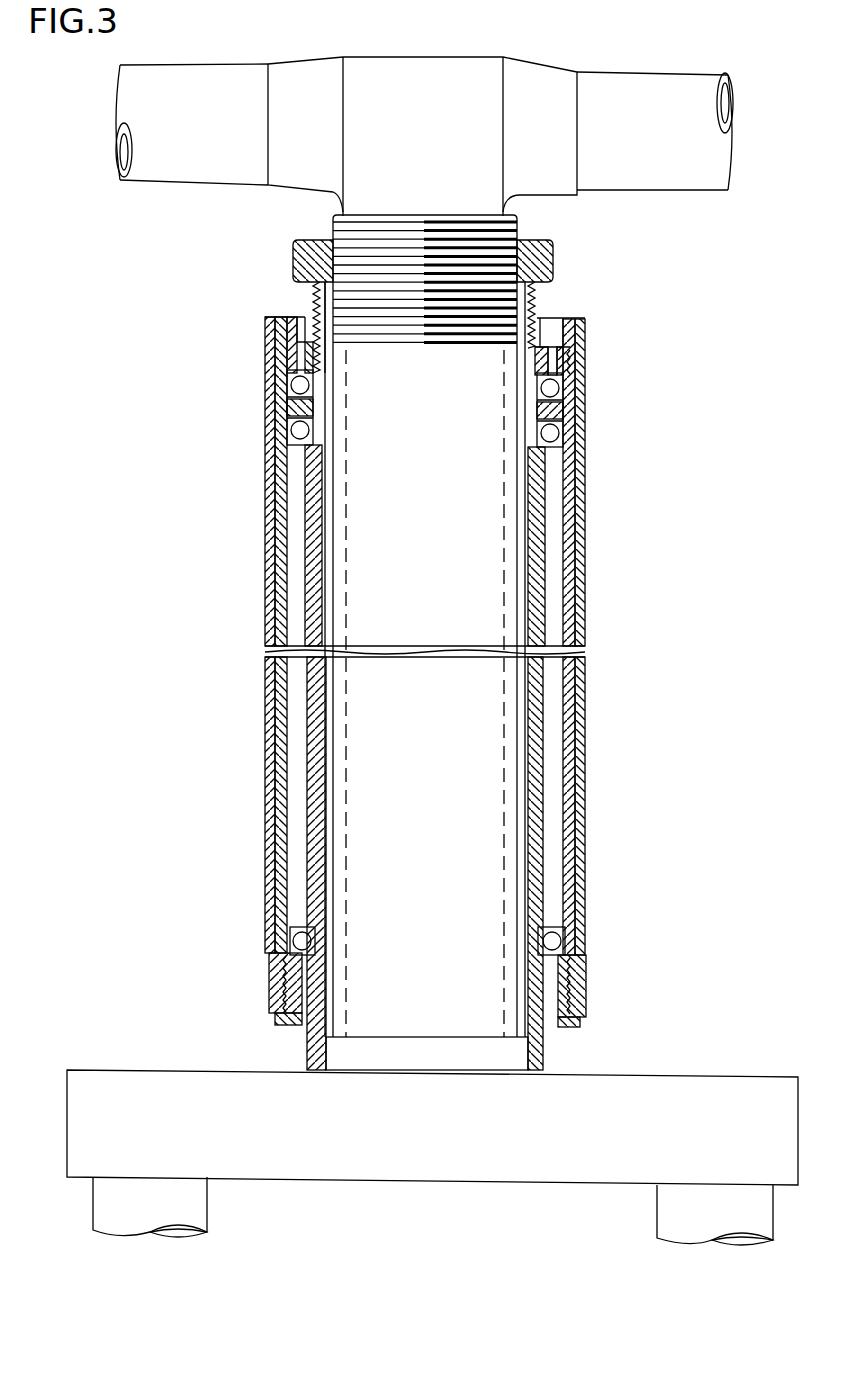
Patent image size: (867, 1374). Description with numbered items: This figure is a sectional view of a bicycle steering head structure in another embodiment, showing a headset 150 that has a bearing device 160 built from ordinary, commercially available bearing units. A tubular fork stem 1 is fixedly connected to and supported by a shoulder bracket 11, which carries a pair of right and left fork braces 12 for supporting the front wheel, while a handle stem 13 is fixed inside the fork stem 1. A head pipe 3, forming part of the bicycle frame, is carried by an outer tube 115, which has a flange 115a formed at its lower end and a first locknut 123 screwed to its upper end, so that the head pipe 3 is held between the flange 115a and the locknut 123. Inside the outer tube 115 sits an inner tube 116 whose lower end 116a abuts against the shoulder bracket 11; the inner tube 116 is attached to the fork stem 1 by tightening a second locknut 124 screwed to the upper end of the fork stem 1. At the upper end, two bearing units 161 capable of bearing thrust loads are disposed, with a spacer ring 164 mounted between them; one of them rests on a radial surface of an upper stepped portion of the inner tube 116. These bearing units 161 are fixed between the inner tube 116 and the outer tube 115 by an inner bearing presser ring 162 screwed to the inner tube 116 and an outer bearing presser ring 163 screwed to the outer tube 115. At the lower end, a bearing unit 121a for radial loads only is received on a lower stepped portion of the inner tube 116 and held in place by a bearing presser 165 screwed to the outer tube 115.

The fork stem 1 is at (517, 752).
The head pipe 3 is at (585, 597).
The shoulder bracket 11 is at (122, 1071).
The fork braces 12 is at (207, 1205).
The handle stem 13 is at (297, 180).
The outer tube 115 is at (280, 572).
The flange 115a is at (272, 978).
The inner tube 116 is at (310, 625).
The lower end 116a is at (326, 1070).
The bearing unit 121a is at (560, 935).
The first locknut 123 is at (265, 340).
The second locknut 124 is at (553, 260).
The headset 150 is at (580, 512).
The bearing device 160 is at (548, 330).
The bearing units 161 is at (558, 432).
The inner bearing presser ring 162 is at (305, 340).
The outer bearing presser ring 163 is at (275, 382).
The spacer ring 164 is at (290, 413).
The bearing presser 165 is at (290, 1025).